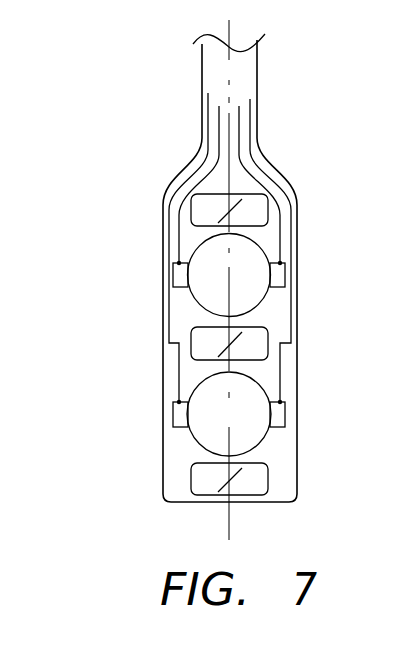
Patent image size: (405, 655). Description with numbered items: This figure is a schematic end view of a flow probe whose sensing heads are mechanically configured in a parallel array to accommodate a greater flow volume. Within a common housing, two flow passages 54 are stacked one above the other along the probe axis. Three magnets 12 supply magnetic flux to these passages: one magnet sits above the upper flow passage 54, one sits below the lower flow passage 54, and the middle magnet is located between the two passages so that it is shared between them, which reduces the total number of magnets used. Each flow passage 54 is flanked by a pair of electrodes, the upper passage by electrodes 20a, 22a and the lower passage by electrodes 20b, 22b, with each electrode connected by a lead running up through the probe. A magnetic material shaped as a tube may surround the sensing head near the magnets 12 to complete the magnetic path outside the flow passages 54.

The magnet 12 is at (268, 215).
The flow passage 54 is at (195, 300).
The electrode 20a is at (173, 267).
The electrode 22a is at (285, 272).
The electrode 20b is at (173, 410).
The electrode 22b is at (285, 408).